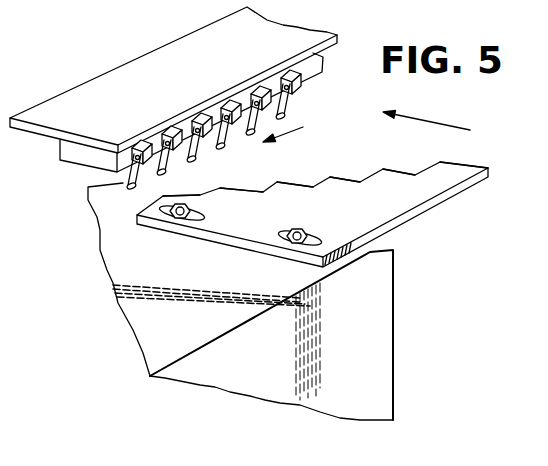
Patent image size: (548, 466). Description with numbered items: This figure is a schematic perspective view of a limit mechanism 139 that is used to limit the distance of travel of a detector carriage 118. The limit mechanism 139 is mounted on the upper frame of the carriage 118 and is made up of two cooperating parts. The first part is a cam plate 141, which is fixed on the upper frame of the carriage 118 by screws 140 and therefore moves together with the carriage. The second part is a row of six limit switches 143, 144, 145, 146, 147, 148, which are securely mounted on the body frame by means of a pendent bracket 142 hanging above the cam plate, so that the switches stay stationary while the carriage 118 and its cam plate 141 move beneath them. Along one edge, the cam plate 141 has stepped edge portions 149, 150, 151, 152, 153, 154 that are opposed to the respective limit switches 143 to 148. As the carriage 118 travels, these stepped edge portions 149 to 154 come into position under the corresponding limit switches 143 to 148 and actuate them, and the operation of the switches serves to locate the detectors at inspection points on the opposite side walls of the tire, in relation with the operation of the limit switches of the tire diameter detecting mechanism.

The carriage 118 is at (392, 358).
The limit mechanism 139 is at (303, 128).
The screws 140 is at (205, 209).
The cam plate 141 is at (410, 202).
The pendent bracket 142 is at (100, 82).
The limit switch 143 is at (140, 140).
The limit switch 144 is at (172, 118).
The limit switch 145 is at (207, 105).
The limit switch 146 is at (228, 102).
The limit switch 147 is at (257, 83).
The limit switch 148 is at (303, 86).
The stepped edge portion 149 is at (163, 196).
The stepped edge portion 150 is at (220, 188).
The stepped edge portion 151 is at (277, 182).
The stepped edge portion 152 is at (330, 177).
The stepped edge portion 153 is at (383, 169).
The stepped edge portion 154 is at (440, 162).